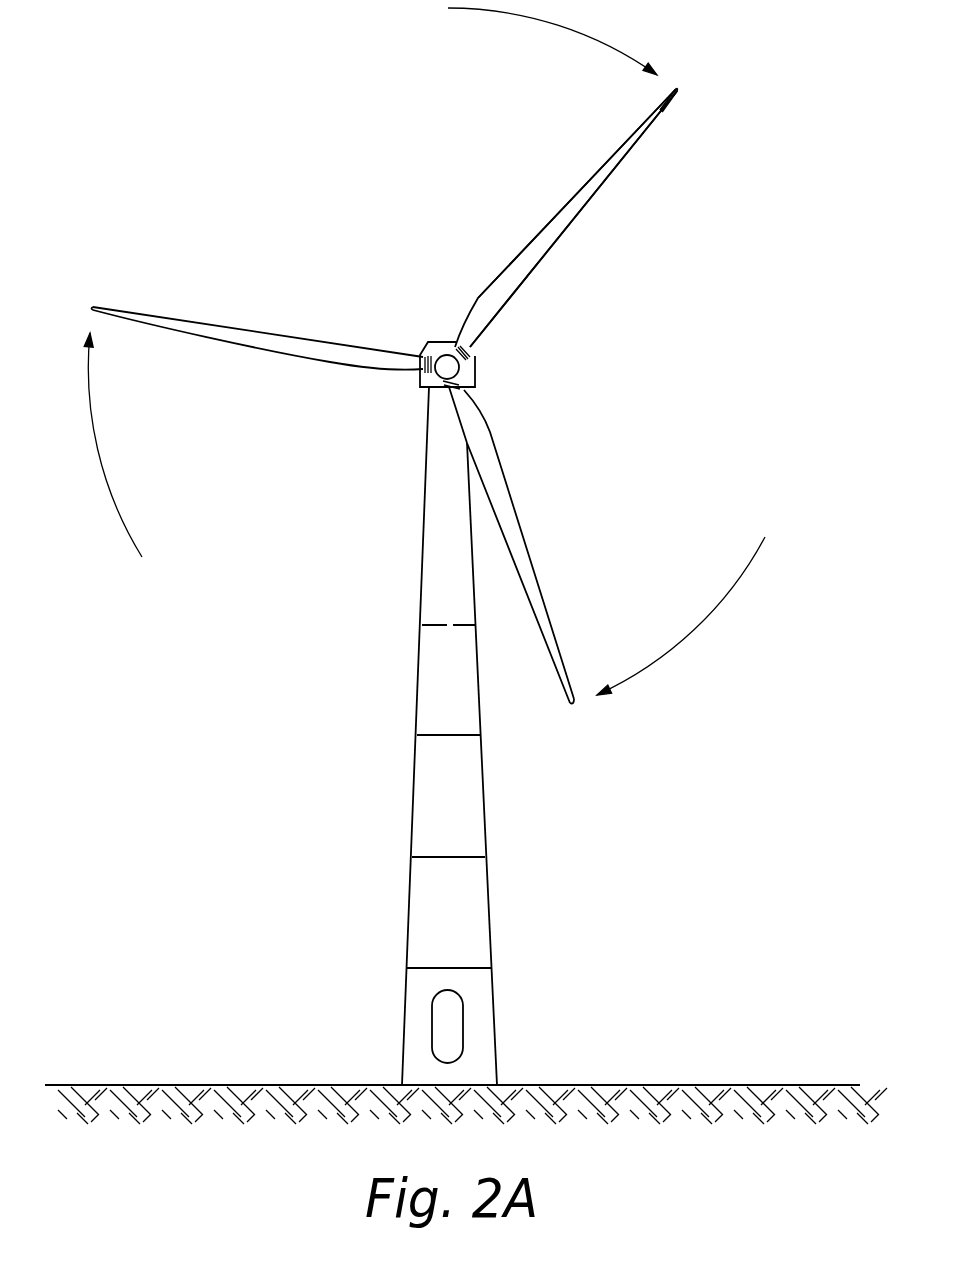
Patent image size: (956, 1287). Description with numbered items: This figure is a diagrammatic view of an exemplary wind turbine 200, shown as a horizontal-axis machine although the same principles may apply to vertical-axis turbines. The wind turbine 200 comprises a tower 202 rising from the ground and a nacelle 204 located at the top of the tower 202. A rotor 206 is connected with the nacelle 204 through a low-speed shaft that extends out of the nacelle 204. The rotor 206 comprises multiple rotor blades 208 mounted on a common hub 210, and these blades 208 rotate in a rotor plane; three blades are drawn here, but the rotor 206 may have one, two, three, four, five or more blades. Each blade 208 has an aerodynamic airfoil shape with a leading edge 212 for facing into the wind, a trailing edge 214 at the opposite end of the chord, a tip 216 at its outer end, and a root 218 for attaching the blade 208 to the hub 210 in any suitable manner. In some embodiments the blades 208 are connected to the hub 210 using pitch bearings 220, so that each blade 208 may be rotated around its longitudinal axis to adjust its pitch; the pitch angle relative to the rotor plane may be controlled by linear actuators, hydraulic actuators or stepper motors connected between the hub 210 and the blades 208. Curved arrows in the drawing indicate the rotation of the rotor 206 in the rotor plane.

The wind turbine 200 is at (348, 943).
The tower 202 is at (473, 807).
The nacelle 204 is at (466, 389).
The rotor 206 is at (397, 402).
The rotor blade 208 is at (220, 338).
The hub 210 is at (447, 367).
The leading edge 212 is at (573, 222).
The trailing edge 214 is at (603, 165).
The tip 216 is at (690, 77).
The root 218 is at (493, 365).
The pitch bearing 220 is at (423, 362).